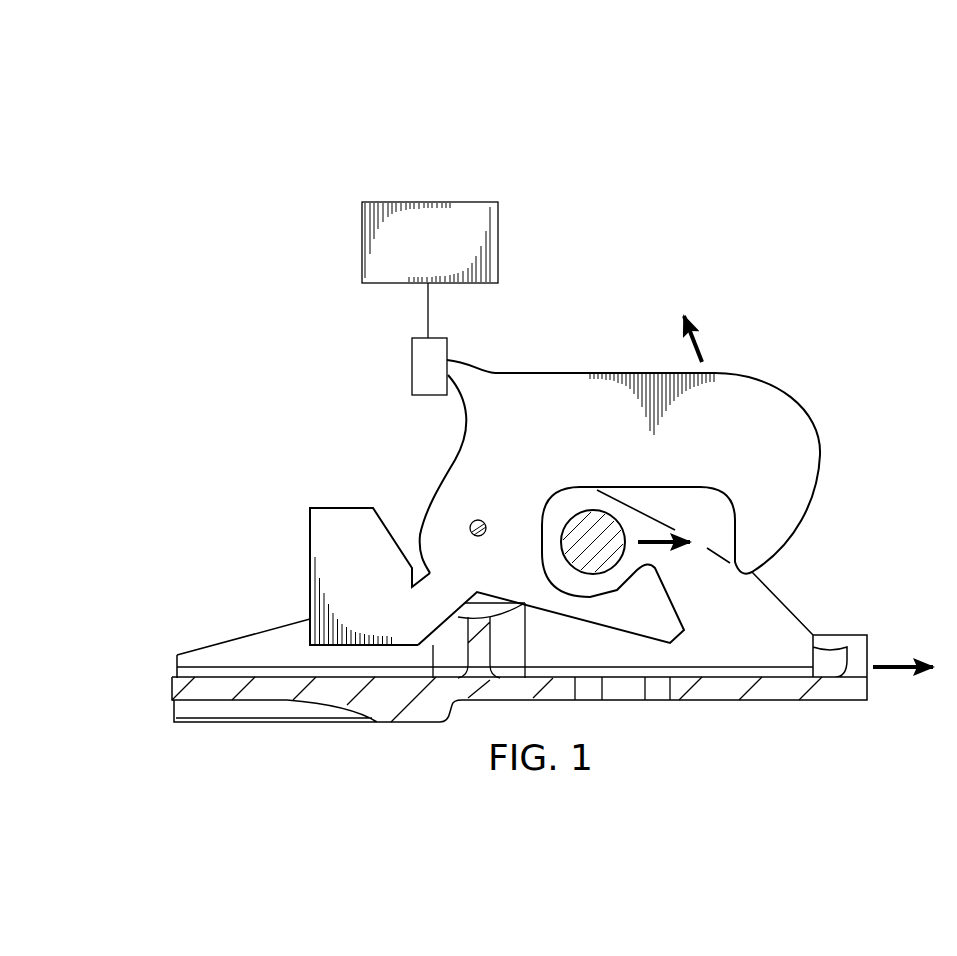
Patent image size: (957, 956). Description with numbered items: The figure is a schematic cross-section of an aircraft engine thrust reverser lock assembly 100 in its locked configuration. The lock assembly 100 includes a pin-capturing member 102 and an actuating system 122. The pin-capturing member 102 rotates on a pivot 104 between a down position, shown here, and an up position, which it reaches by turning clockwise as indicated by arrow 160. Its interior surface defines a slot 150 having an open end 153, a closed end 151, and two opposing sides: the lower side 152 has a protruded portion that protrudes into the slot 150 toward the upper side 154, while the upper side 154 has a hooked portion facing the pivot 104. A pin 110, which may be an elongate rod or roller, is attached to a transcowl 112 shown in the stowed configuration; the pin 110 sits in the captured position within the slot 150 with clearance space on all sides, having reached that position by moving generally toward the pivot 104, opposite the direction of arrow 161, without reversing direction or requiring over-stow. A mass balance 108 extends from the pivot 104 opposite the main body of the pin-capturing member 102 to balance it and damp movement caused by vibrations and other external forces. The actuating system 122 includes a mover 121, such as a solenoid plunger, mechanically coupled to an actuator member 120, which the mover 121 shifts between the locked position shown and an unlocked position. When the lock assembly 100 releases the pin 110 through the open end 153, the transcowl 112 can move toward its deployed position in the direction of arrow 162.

The thrust reverser lock assembly 100 is at (630, 216).
The pin-capturing member 102 is at (821, 436).
The pivot 104 is at (480, 519).
The mass balance 108 is at (318, 535).
The pin 110 is at (595, 522).
The transcowl 112 is at (172, 690).
The actuator member 120 is at (412, 361).
The mover 121 is at (362, 243).
The actuating system 122 is at (442, 199).
The slot 150 is at (735, 583).
The closed end 151 is at (530, 545).
The lower side 152 is at (624, 603).
The open end 153 is at (735, 602).
The upper side 154 is at (630, 468).
The arrow 160 is at (698, 340).
The arrow 161 is at (659, 540).
The arrow 162 is at (911, 672).